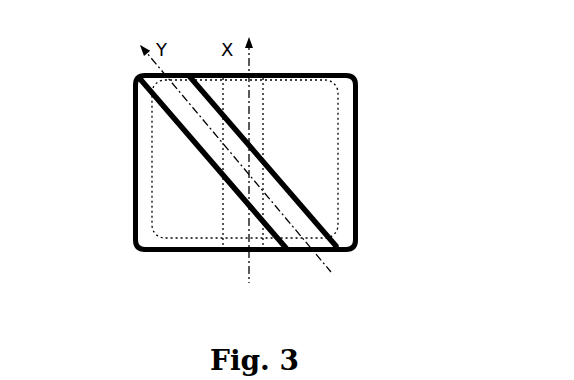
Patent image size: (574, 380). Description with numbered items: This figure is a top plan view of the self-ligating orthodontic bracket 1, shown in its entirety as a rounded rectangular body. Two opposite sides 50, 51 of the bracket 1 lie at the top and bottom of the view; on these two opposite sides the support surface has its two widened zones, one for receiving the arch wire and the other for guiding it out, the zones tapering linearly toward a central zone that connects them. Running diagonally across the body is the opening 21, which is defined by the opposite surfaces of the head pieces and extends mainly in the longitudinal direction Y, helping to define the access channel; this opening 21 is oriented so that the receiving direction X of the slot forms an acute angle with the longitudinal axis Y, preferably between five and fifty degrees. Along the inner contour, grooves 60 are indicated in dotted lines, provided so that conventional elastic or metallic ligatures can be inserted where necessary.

The self-ligating orthodontic bracket 1 is at (285, 178).
The side of the bracket 50 is at (284, 73).
The side of the bracket 51 is at (197, 254).
The opening 21 is at (307, 262).
The grooves 60 is at (137, 160).